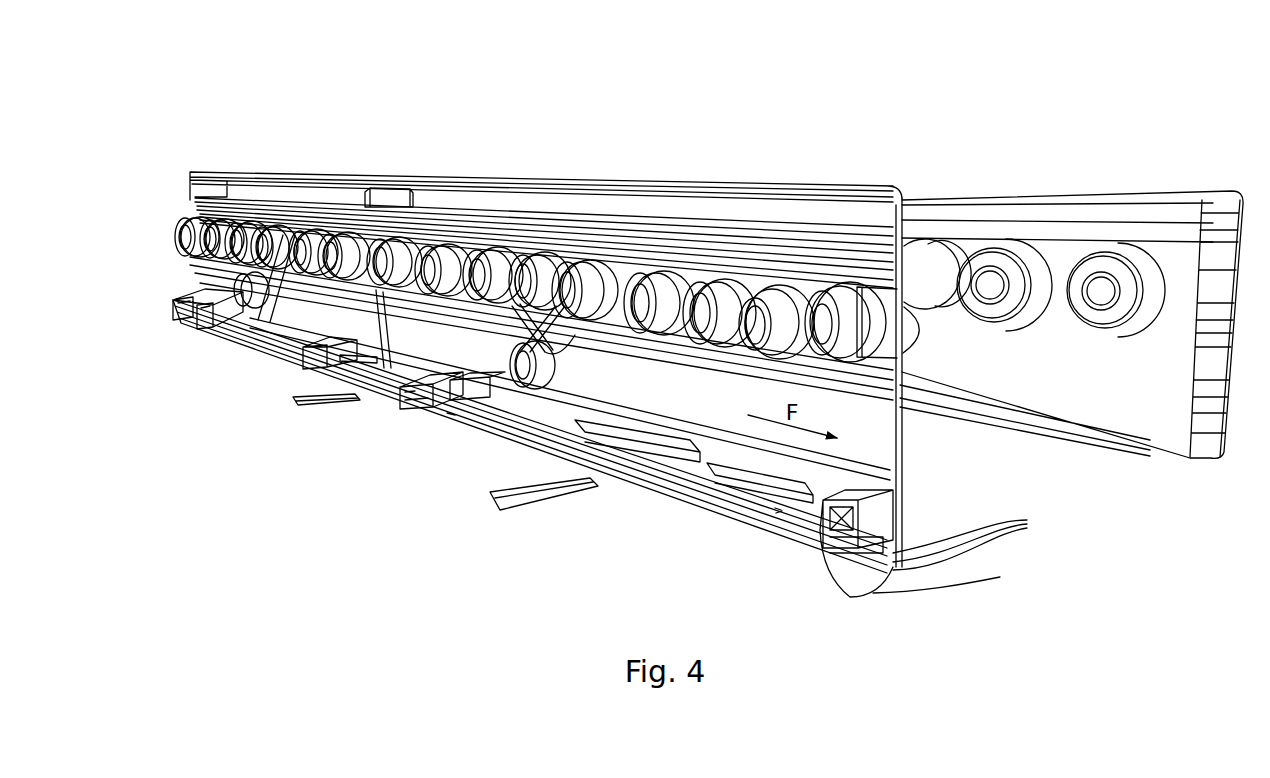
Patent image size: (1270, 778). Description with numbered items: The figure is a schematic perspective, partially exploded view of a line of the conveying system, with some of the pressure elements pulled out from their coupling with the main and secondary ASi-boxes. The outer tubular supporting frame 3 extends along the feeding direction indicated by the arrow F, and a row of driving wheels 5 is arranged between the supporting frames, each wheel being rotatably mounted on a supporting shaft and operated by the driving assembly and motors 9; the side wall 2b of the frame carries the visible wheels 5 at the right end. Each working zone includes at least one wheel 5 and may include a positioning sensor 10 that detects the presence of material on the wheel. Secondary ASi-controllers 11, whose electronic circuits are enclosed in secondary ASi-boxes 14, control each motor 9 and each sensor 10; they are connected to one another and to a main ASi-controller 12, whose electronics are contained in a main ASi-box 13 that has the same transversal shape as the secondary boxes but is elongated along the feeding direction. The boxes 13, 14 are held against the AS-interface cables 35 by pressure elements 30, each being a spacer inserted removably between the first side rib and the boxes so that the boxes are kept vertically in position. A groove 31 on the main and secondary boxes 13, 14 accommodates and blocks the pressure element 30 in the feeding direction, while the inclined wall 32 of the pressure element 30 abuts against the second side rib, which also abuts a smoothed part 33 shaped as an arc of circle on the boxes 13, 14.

The side wall of housing 2b is at (905, 206).
The supporting frame 3 is at (968, 190).
The driving wheel 5 is at (1000, 262).
The motor 9 is at (905, 331).
The positioning sensor 10 is at (383, 193).
The secondary ASi-controller 11 is at (850, 485).
The main ASi-controller 12 is at (741, 519).
The main ASi-box 13 is at (893, 574).
The secondary ASi-box 14 is at (413, 413).
The pressure element 30 is at (570, 497).
The groove 31 is at (777, 515).
The inclined wall 32 is at (500, 512).
The smoothed part 33 is at (486, 423).
The AS-interface cable 35 is at (973, 540).